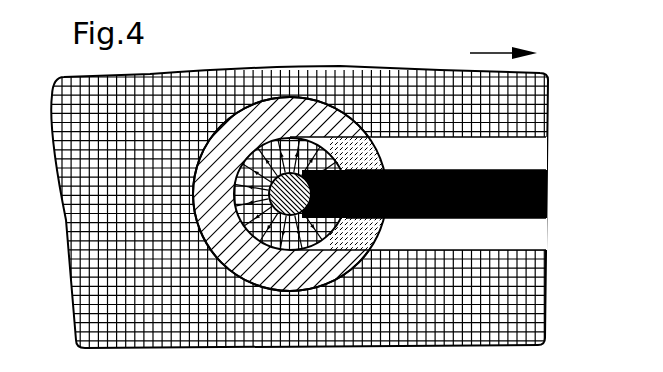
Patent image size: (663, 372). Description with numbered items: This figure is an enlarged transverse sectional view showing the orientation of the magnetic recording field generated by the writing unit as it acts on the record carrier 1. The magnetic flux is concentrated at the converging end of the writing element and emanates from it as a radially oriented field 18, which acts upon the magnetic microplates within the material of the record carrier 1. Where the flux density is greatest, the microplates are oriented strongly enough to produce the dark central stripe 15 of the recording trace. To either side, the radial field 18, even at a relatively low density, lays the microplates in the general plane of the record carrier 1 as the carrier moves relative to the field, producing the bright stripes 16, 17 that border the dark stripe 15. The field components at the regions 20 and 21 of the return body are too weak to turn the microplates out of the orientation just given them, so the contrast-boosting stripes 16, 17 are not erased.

The record carrier 1 is at (543, 298).
The dark central stripe 15 is at (547, 196).
The bright stripe 16 is at (533, 150).
The bright stripe 17 is at (530, 237).
The radially oriented field 18 is at (296, 137).
The region of return body 20 is at (392, 150).
The region of return body 21 is at (392, 238).